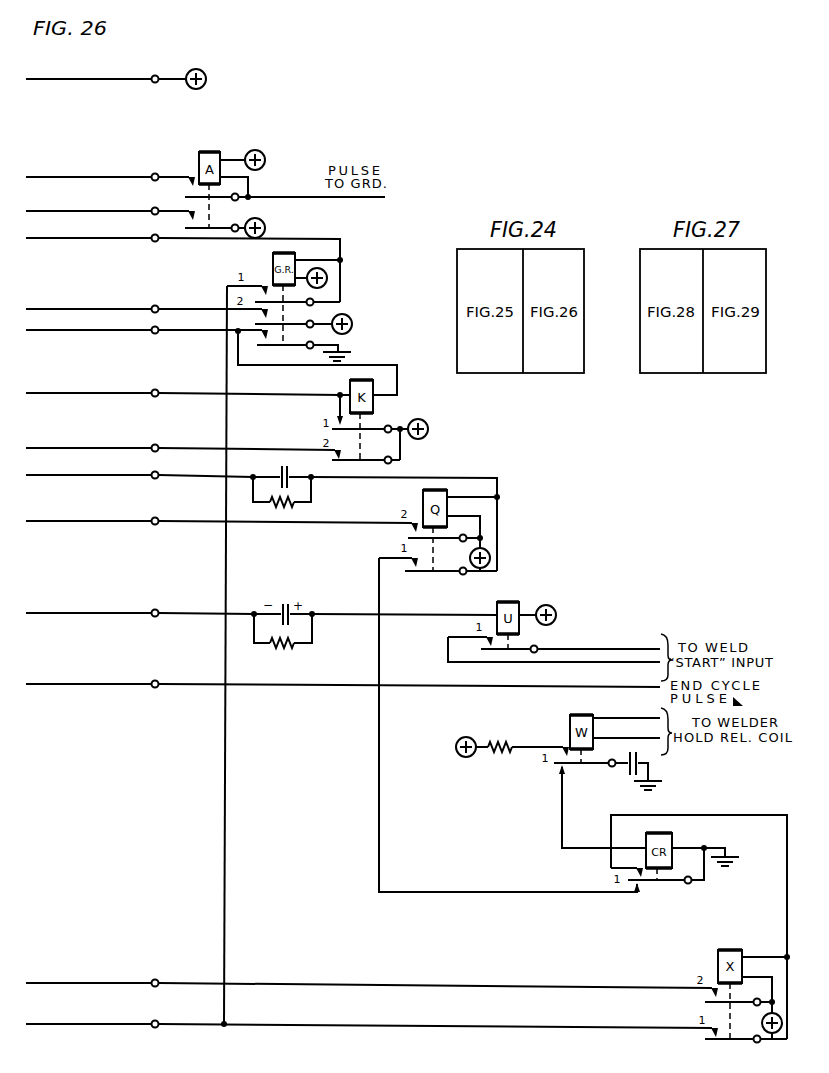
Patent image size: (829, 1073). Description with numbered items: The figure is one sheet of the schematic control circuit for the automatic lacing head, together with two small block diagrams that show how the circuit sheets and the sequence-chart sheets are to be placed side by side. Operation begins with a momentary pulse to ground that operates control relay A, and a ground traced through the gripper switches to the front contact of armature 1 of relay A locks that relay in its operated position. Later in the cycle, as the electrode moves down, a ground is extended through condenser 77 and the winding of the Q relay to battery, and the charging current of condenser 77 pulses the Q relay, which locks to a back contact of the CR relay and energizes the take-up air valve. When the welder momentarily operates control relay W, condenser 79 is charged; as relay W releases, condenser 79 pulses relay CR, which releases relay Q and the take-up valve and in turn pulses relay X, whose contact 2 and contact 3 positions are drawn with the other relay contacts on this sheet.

The armature 1 is at (203, 182).
The relay contact 2 is at (202, 214).
The relay contact 3 is at (255, 326).
The condenser 77 is at (283, 463).
The condenser 79 is at (623, 769).